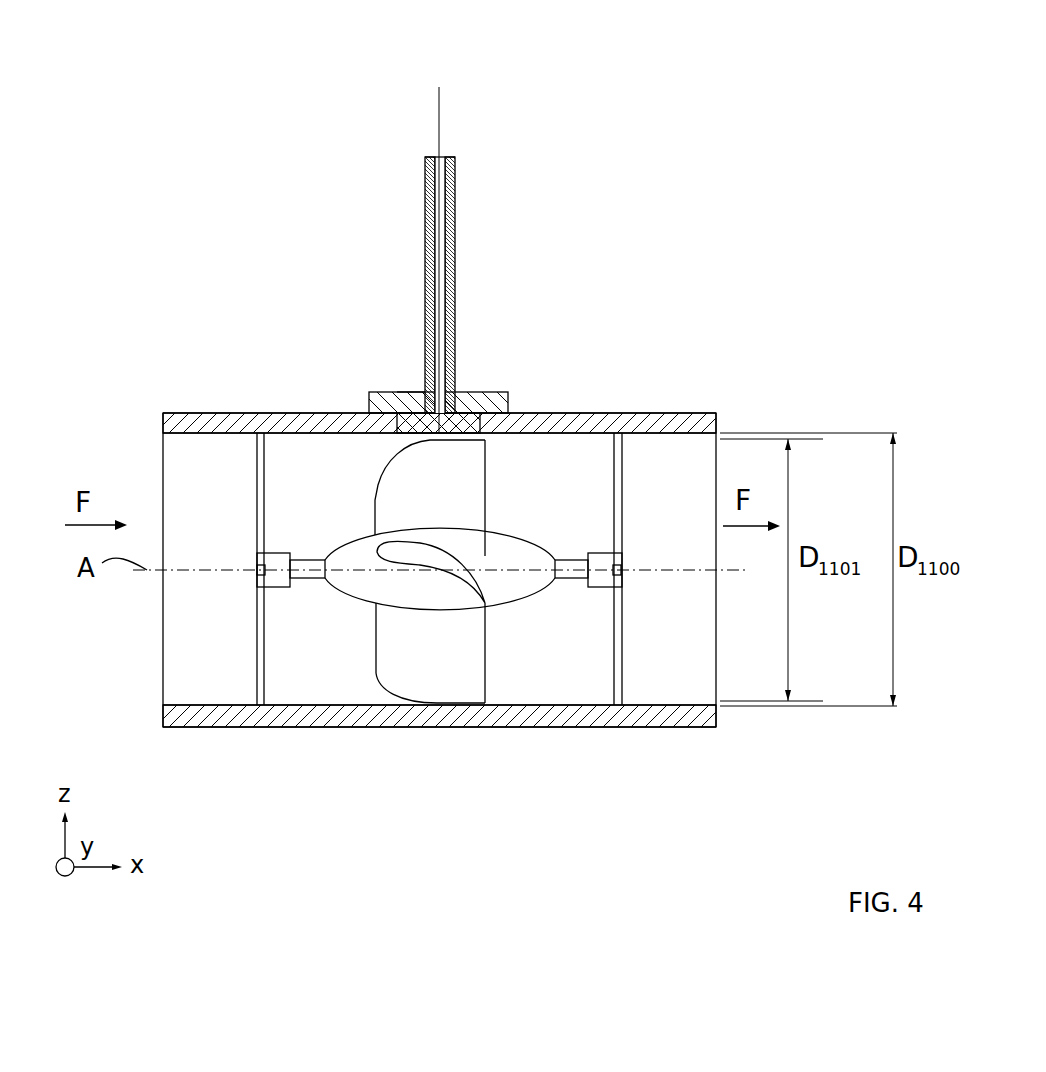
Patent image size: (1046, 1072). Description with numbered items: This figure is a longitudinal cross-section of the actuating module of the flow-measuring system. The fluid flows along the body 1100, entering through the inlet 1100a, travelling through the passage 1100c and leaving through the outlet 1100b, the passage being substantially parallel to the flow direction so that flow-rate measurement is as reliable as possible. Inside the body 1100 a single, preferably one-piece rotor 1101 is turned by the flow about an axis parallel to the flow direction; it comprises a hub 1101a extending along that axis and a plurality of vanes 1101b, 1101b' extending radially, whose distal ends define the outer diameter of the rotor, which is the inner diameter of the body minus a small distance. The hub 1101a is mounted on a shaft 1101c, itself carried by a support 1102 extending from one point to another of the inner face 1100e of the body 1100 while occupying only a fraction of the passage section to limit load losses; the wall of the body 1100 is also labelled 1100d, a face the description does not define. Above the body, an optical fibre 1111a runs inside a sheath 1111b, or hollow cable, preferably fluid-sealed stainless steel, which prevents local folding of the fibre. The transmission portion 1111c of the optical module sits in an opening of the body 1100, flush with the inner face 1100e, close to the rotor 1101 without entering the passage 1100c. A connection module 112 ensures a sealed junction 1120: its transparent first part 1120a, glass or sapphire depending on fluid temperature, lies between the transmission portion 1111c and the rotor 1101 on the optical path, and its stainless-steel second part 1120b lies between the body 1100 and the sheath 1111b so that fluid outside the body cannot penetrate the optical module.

The body 1100 is at (433, 510).
The inlet 1100a is at (163, 622).
The outlet 1100b is at (715, 462).
The passage 1100c is at (190, 662).
The outer surface of housing 1100d is at (183, 413).
The inner face of the body 1100e is at (183, 433).
The rotor 1101 is at (476, 628).
The hub 1101a is at (530, 578).
The vane 1101b is at (415, 611).
The vane 1101b' is at (453, 678).
The shaft 1101c is at (573, 573).
The support 1102 is at (262, 643).
The optical fibre 1111a is at (439, 87).
The sheath 1111b is at (452, 190).
The transmission portion 1111c is at (410, 392).
The sealed junction 1120 is at (540, 369).
The first part of the sealed junction 1120a is at (472, 418).
The second part of the sealed junction 1120b is at (453, 405).
The connection module 112 is at (540, 369).